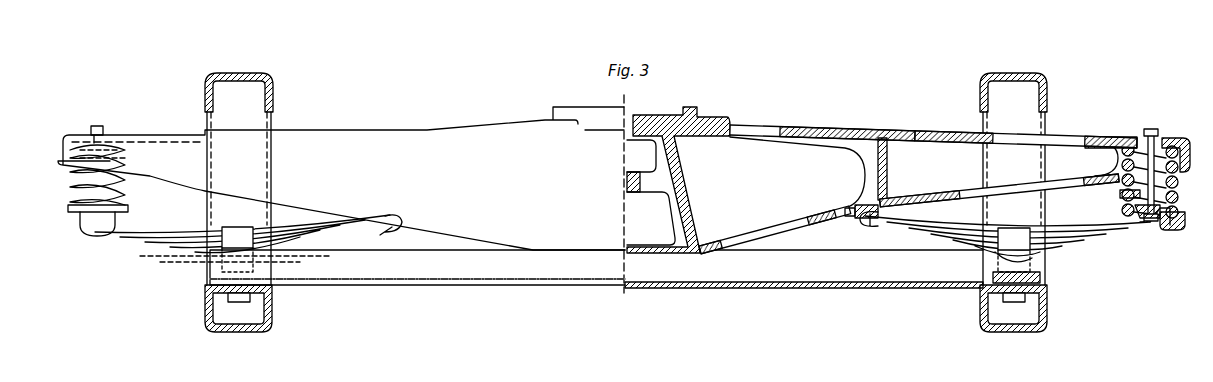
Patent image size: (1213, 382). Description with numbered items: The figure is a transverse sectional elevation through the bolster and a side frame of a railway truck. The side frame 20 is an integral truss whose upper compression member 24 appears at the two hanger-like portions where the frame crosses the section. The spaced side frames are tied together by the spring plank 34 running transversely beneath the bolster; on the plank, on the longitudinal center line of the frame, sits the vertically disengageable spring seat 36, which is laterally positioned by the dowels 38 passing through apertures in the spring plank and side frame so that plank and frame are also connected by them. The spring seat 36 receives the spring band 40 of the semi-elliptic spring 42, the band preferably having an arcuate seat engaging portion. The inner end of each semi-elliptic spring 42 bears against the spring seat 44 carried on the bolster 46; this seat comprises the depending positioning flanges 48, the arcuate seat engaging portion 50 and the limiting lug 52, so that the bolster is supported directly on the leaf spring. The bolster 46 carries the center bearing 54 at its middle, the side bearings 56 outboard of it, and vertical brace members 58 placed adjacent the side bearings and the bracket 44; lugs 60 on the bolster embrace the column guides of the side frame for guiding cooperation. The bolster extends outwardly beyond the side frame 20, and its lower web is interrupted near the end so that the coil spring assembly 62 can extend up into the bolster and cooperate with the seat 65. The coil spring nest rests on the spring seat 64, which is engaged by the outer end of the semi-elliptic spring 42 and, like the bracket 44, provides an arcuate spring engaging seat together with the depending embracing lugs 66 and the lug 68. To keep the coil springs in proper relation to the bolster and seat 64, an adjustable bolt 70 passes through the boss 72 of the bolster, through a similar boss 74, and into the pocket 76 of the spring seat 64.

The side frame 20 is at (276, 84).
The compression member 24 is at (238, 73).
The spring plank 34 is at (880, 292).
The spring seat 36 is at (1042, 280).
The dowel 38 is at (230, 297).
The spring band 40 is at (236, 228).
The semi-elliptic spring 42 is at (322, 240).
The spring seat 44 is at (866, 220).
The bolster 46 is at (693, 255).
The depending positioning flange 48 is at (400, 224).
The arcuate seat engaging portion 50 is at (884, 210).
The limiting lug 52 is at (838, 222).
The center bearing 54 is at (692, 108).
The side bearing 56 is at (868, 126).
The vertical brace member 58 is at (856, 167).
The lug 60 is at (280, 142).
The coil spring assembly 62 is at (76, 188).
The spring seat 64 is at (1176, 222).
The seat 65 is at (1132, 135).
The depending embracing lug 66 is at (92, 232).
The lug 68 is at (68, 212).
The adjustable bolt 70 is at (98, 124).
The boss 72 is at (1176, 138).
The boss 74 is at (1120, 195).
The pocket 76 is at (1134, 211).